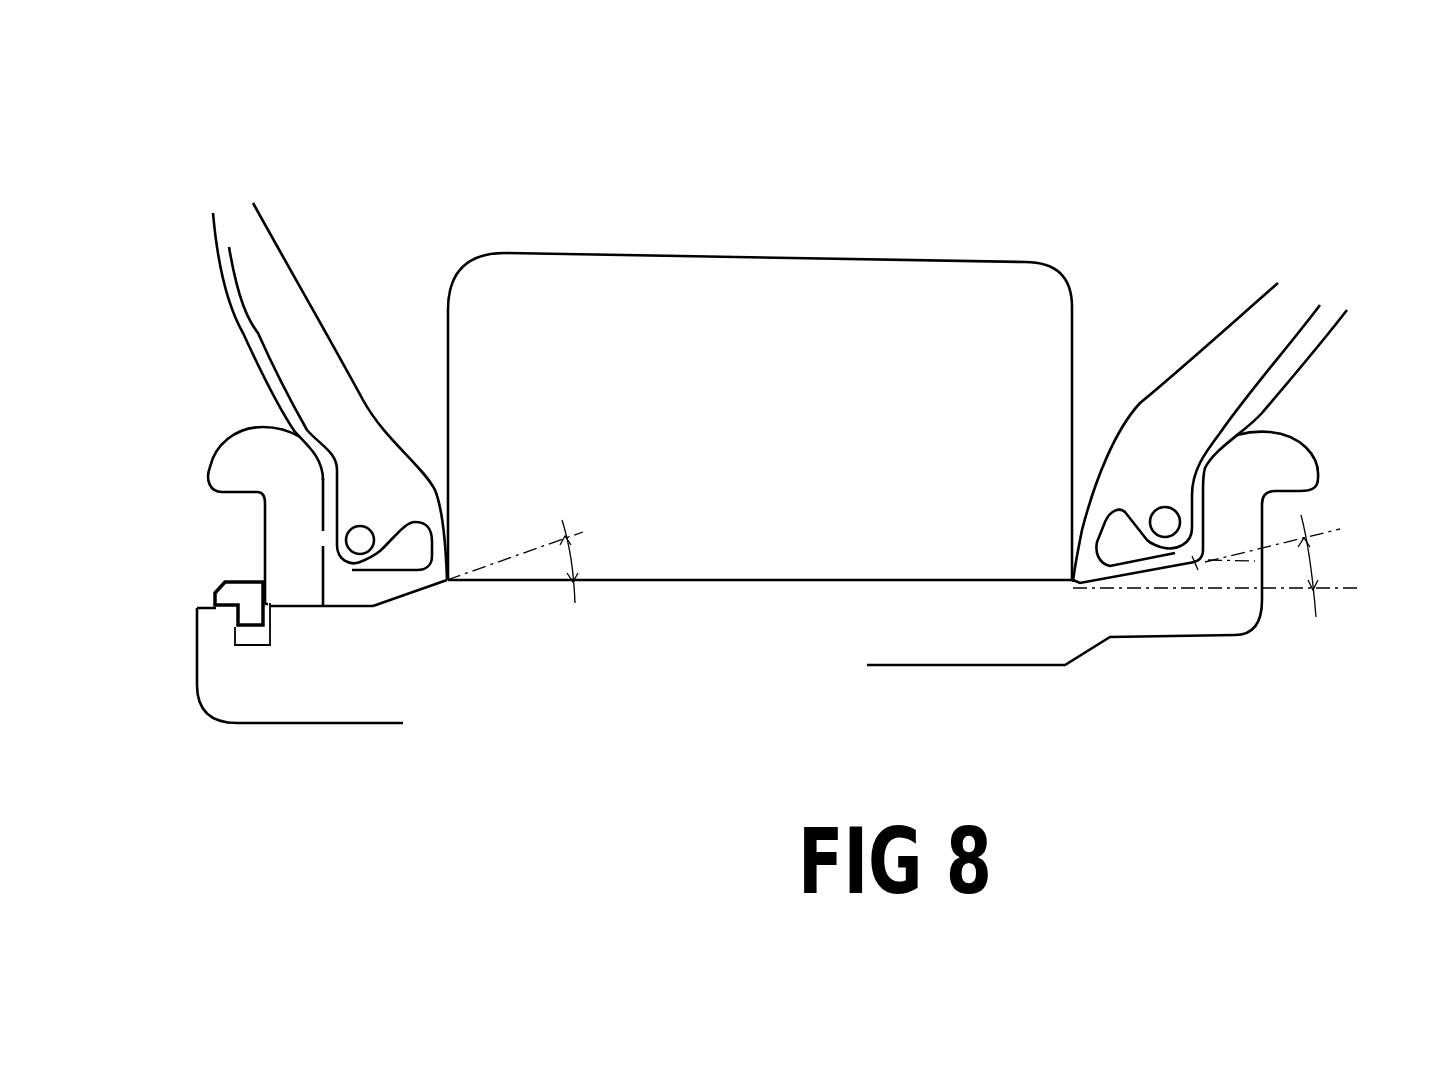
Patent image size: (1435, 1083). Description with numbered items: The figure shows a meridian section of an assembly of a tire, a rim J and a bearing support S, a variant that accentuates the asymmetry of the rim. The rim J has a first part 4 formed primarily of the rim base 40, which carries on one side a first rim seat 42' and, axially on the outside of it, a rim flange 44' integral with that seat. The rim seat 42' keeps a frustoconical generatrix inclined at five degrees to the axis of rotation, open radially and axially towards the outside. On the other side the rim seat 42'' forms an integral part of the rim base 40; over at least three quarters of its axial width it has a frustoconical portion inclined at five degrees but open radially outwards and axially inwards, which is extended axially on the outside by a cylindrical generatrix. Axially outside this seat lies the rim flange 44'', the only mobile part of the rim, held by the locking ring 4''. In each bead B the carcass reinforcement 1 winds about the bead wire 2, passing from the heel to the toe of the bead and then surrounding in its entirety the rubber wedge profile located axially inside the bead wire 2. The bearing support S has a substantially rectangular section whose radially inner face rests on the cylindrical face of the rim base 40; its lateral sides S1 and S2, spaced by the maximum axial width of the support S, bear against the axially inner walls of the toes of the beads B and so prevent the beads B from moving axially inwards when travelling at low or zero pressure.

The carcass reinforcement 1 is at (273, 360).
The bead wire 2 is at (362, 540).
The first part of the rim 4 is at (729, 697).
The rim base 40 is at (832, 627).
The first rim seat 42' is at (1138, 642).
The rim seat 42'' is at (423, 644).
The rim flange 44' is at (1325, 516).
The rim flange 44'' is at (227, 514).
The locking ring 4'' is at (231, 690).
The bearing support S is at (757, 318).
The lateral side of the bearing support S1 is at (452, 405).
The lateral side of the bearing support S2 is at (1068, 427).
The bead B is at (247, 255).
The rim J is at (544, 708).